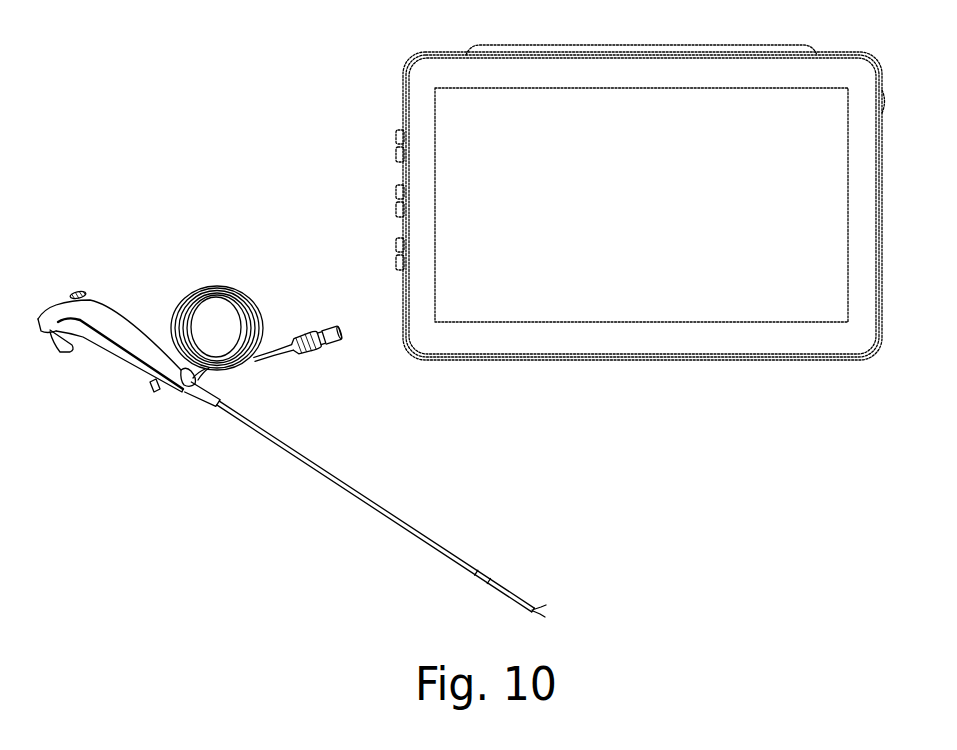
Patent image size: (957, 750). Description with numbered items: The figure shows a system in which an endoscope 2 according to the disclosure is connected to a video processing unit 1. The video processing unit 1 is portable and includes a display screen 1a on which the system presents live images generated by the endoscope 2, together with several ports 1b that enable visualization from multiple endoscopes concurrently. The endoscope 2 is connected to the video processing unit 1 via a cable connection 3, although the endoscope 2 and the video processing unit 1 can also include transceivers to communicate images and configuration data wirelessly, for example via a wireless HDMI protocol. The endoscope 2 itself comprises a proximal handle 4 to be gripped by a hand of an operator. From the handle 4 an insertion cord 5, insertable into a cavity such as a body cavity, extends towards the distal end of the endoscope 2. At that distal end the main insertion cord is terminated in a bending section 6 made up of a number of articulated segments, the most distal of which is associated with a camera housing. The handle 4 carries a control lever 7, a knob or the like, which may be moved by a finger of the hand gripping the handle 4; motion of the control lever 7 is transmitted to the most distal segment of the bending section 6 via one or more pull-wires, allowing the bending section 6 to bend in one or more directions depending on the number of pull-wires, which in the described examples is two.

The video processing unit 1 is at (360, 110).
The display screen 1a is at (530, 106).
The ports 1b is at (399, 145).
The endoscope 2 is at (346, 535).
The cable connection 3 is at (203, 294).
The proximal handle 4 is at (108, 320).
The insertion cord 5 is at (318, 468).
The bending section 6 is at (510, 598).
The control lever 7 is at (73, 292).